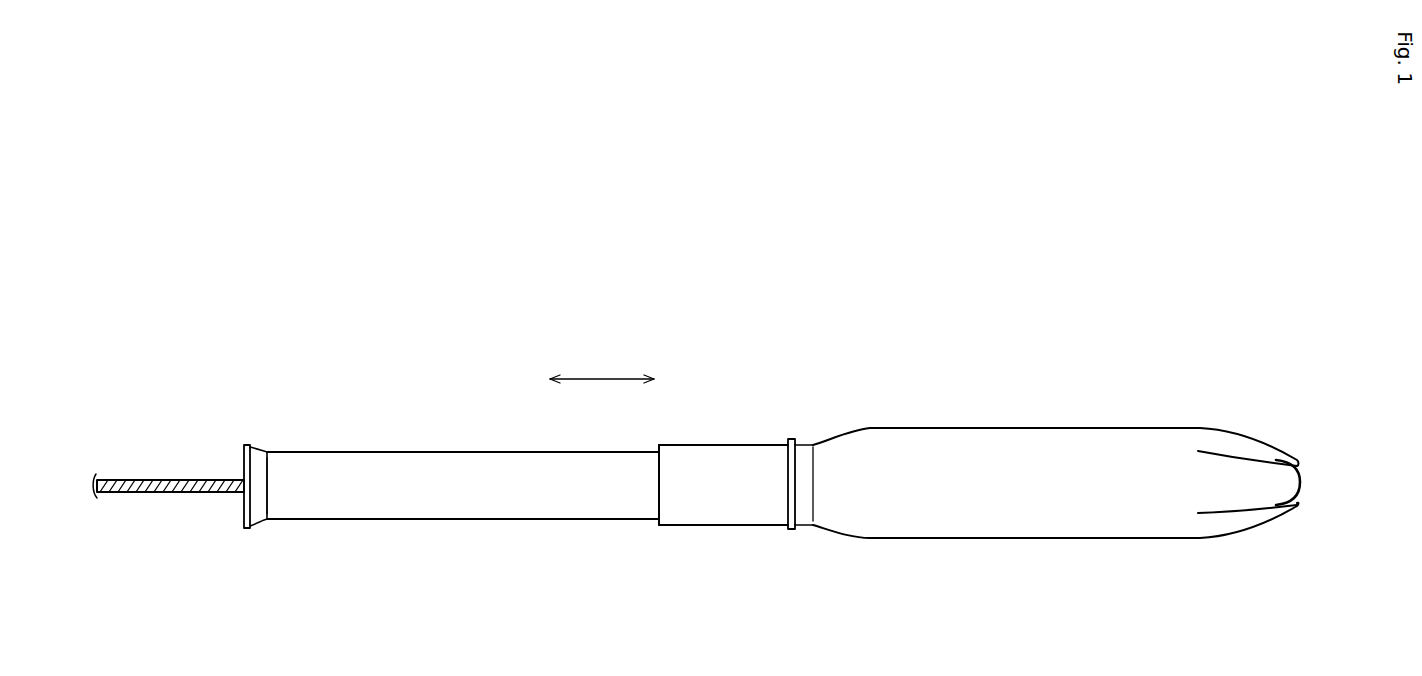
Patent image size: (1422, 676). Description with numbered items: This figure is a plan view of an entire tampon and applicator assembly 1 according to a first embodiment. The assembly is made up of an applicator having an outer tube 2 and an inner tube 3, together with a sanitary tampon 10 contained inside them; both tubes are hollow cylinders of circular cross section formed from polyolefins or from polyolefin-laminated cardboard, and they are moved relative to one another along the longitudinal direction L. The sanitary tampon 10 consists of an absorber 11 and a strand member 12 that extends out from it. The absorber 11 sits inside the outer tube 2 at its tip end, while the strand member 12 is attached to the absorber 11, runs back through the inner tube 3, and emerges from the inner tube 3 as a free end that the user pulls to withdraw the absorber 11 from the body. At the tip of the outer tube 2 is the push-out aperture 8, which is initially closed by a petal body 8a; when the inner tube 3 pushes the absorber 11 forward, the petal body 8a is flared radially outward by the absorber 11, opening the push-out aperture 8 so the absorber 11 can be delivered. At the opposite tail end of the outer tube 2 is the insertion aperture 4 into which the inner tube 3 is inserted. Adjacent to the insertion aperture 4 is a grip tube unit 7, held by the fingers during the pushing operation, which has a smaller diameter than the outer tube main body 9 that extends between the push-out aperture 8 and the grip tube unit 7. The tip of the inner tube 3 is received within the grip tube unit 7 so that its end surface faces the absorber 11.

The tampon and applicator assembly 1 is at (916, 398).
The outer tube 2 is at (1140, 540).
The inner tube 3 is at (377, 510).
The insertion aperture 4 is at (659, 526).
The grip tube unit 7 is at (720, 521).
The push-out aperture 8 is at (1298, 467).
The petal body 8a is at (1300, 478).
The outer tube main body 9 is at (1026, 522).
The sanitary tampon 10 is at (709, 524).
The absorber 11 is at (1265, 508).
The strand member 12 is at (162, 493).
The longitudinal direction L is at (602, 368).